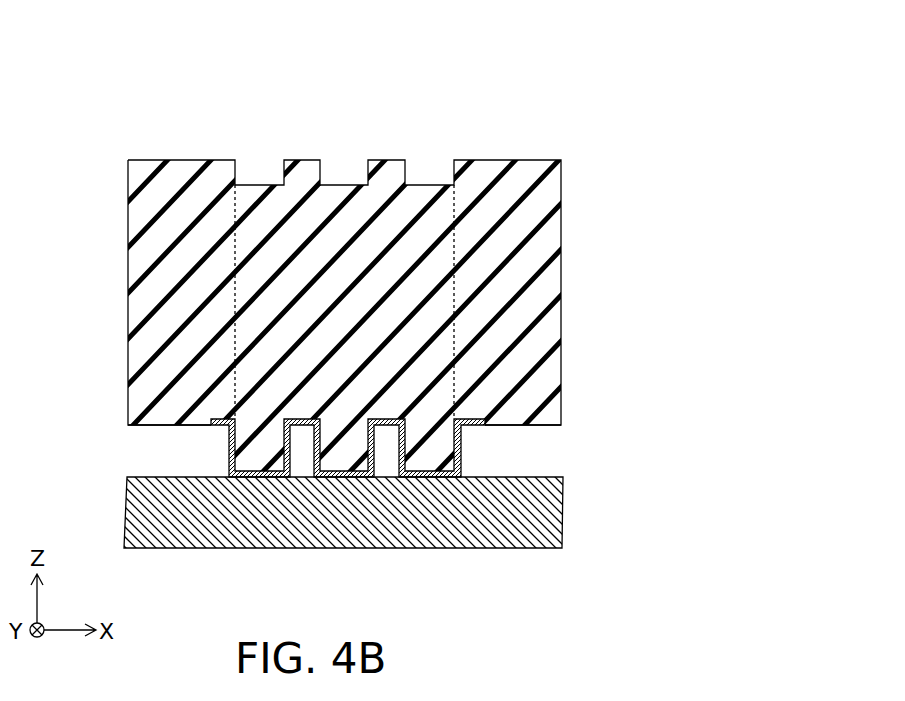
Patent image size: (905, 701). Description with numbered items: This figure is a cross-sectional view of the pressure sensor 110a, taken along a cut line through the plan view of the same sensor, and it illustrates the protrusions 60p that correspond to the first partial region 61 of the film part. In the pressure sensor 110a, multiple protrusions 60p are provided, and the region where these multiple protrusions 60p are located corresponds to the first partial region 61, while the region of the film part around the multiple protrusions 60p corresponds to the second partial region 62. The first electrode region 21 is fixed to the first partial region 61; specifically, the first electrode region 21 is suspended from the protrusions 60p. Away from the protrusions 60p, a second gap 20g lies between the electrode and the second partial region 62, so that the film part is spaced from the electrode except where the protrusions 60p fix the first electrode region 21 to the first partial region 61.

The pressure sensor 110a is at (462, 70).
The second partial region 62 is at (183, 186).
The first partial region 61 is at (425, 235).
The protrusion 60p is at (256, 450).
The first electrode region 21 is at (347, 512).
The second gap 20g is at (170, 455).